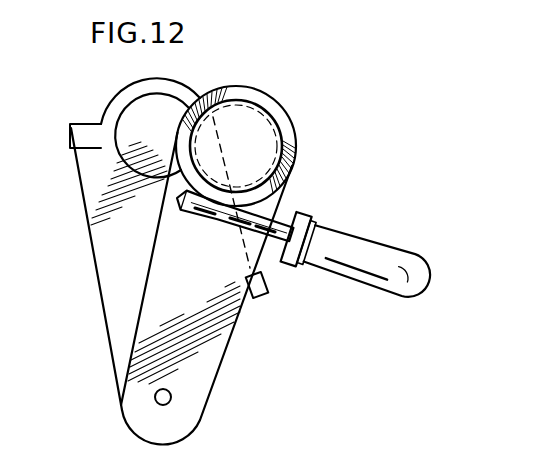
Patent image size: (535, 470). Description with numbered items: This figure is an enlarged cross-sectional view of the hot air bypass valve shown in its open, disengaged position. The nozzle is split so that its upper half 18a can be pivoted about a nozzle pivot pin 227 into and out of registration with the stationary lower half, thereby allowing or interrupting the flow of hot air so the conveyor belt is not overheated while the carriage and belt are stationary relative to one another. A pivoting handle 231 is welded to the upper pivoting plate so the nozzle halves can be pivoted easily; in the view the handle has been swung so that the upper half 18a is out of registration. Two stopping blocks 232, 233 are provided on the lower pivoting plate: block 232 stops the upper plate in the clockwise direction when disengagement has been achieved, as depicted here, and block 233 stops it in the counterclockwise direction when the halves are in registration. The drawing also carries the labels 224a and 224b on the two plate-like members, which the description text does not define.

The upper half of the nozzle 18a is at (277, 118).
The first handle member 224a is at (285, 195).
The second handle member 224b is at (125, 282).
The nozzle pivot pin 227 is at (168, 400).
The pivoting handle 231 is at (367, 260).
The stopping block 232 is at (266, 286).
The stopping block 233 is at (82, 138).